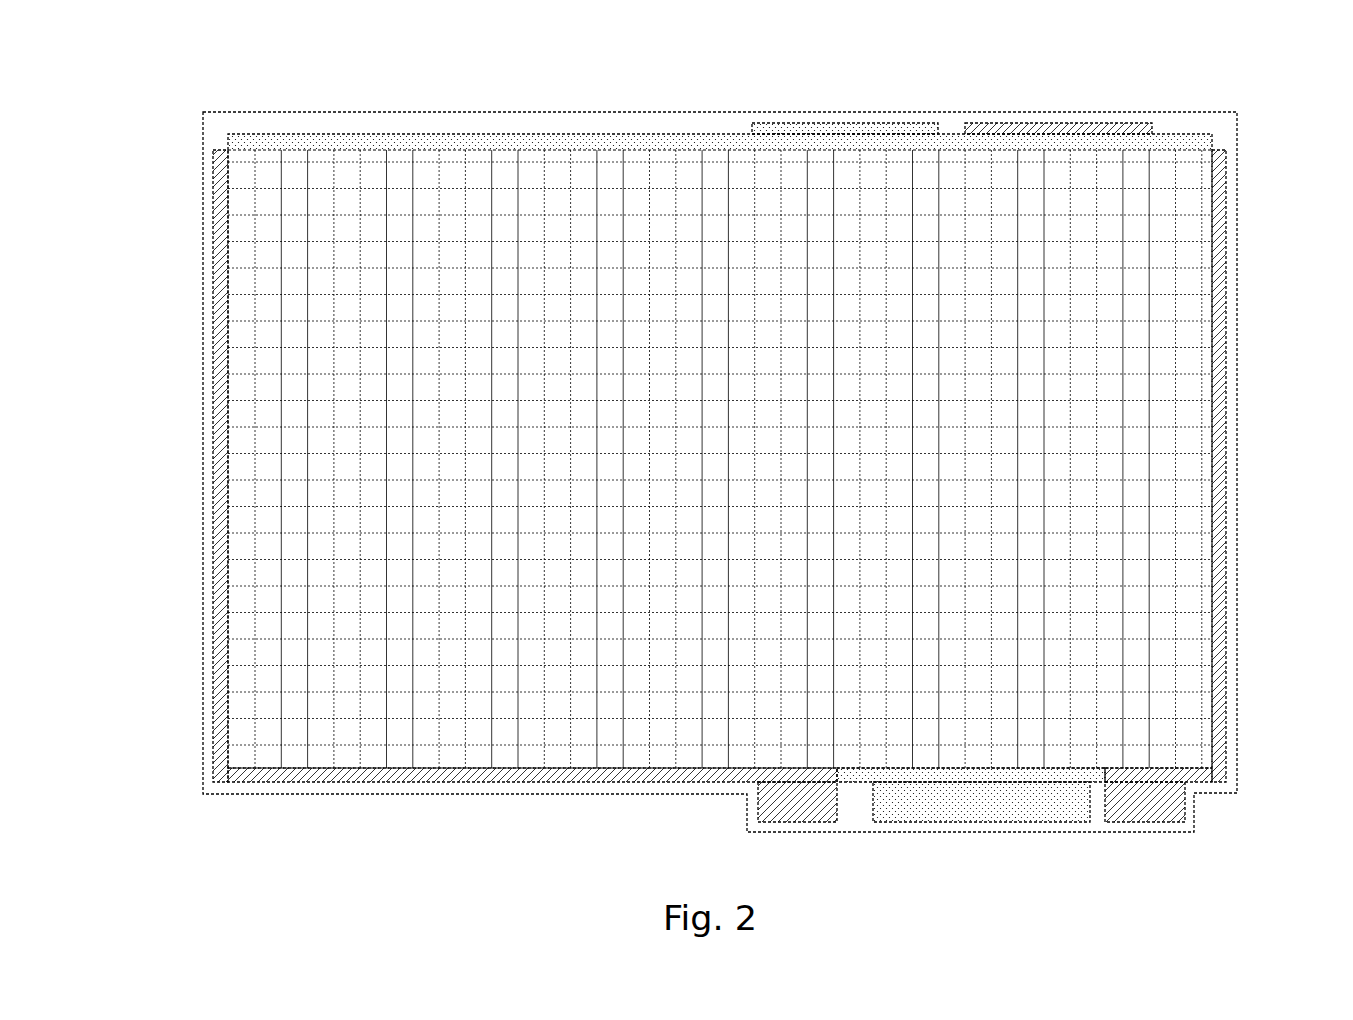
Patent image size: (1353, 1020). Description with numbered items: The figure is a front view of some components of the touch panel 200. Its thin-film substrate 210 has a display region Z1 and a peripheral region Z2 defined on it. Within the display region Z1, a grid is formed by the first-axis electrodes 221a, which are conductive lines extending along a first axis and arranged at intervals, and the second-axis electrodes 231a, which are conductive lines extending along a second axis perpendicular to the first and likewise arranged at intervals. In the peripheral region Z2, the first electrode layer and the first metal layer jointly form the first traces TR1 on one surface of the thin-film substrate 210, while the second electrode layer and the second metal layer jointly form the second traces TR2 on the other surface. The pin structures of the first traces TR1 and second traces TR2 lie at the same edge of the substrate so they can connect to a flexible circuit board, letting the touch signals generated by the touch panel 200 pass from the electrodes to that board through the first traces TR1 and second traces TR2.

The touch panel 200 is at (130, 67).
The thin-film substrate 210 is at (464, 112).
The first-axis electrodes 221a is at (255, 335).
The second-axis electrodes 231a is at (265, 453).
The first traces TR1 is at (990, 815).
The second traces TR2 is at (1220, 457).
The display region Z1 is at (525, 140).
The peripheral region Z2 is at (376, 92).